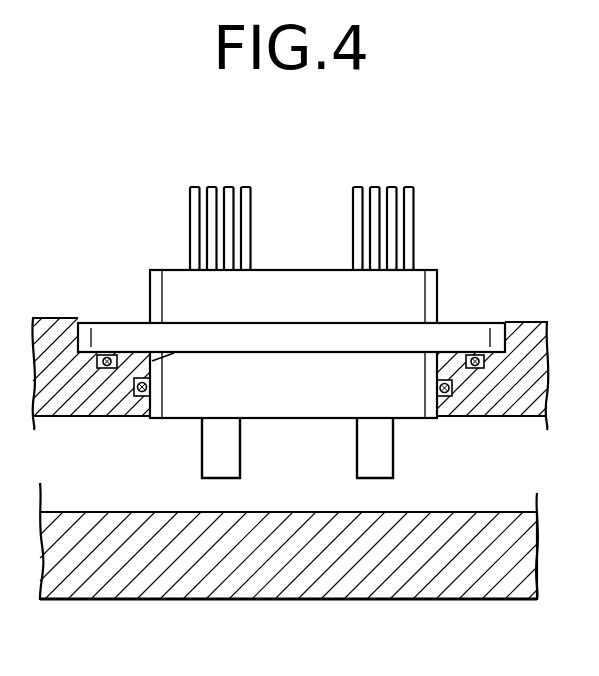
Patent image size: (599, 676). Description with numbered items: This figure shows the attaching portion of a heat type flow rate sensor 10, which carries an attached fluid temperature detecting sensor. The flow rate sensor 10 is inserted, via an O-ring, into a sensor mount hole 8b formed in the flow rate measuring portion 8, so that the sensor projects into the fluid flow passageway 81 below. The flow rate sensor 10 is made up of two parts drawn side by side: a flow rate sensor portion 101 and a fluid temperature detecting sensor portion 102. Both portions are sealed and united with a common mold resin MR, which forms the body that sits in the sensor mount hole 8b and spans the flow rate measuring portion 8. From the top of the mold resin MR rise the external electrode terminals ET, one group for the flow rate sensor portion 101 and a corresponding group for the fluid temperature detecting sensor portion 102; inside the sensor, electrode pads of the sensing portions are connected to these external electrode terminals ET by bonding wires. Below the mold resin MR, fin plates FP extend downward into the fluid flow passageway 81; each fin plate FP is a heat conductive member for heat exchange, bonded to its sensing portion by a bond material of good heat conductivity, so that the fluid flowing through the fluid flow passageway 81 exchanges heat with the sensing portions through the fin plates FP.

The heat type flow rate sensor 10 is at (291, 256).
The flow rate sensor portion 101 is at (270, 184).
The fluid temperature detecting sensor portion 102 is at (390, 204).
The flow rate measuring portion 8 is at (46, 340).
The sensor mount hole 8b is at (172, 358).
The fluid flow passageway 81 is at (487, 477).
The external electrode terminals ET is at (307, 204).
The mold resin MR is at (421, 291).
The fin plate FP is at (362, 453).